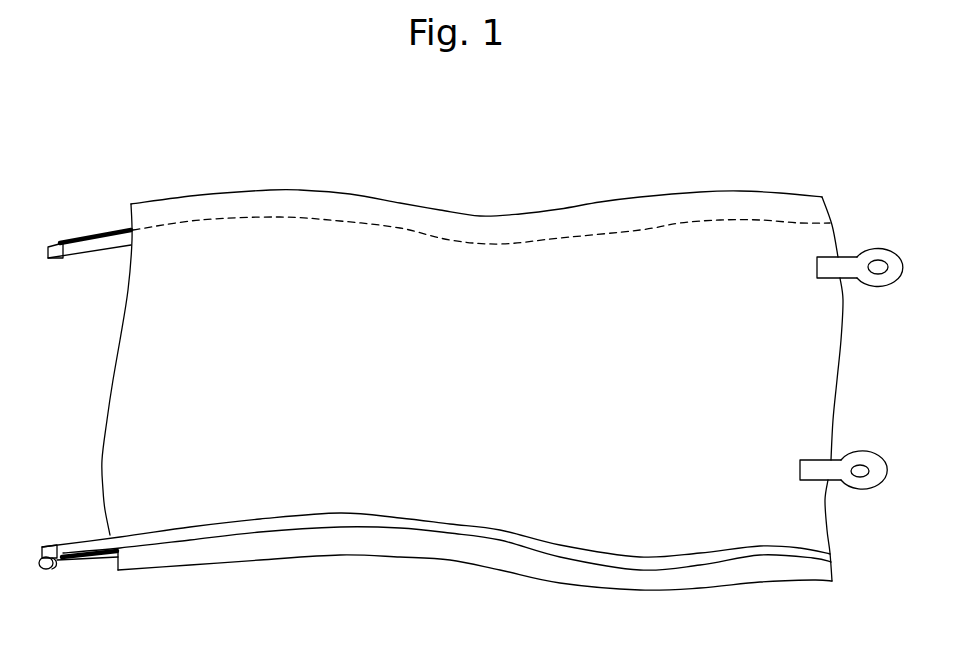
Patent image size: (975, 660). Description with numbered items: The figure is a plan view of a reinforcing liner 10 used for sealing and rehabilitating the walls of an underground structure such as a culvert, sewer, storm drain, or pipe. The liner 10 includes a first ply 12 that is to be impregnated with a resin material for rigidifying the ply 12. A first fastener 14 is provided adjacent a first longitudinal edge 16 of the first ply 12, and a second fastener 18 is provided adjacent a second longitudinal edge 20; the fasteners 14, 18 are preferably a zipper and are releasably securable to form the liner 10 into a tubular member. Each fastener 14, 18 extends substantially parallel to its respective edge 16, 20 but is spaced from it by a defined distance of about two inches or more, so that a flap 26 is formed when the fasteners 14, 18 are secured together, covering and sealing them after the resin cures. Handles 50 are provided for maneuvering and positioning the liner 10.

The reinforcing liner 10 is at (566, 140).
The first ply 12 is at (148, 388).
The first fastener 14 is at (186, 535).
The first longitudinal edge 16 is at (345, 568).
The second fastener 18 is at (108, 242).
The second longitudinal edge 20 is at (316, 179).
The flap 26 is at (430, 557).
The handles 50 is at (878, 299).